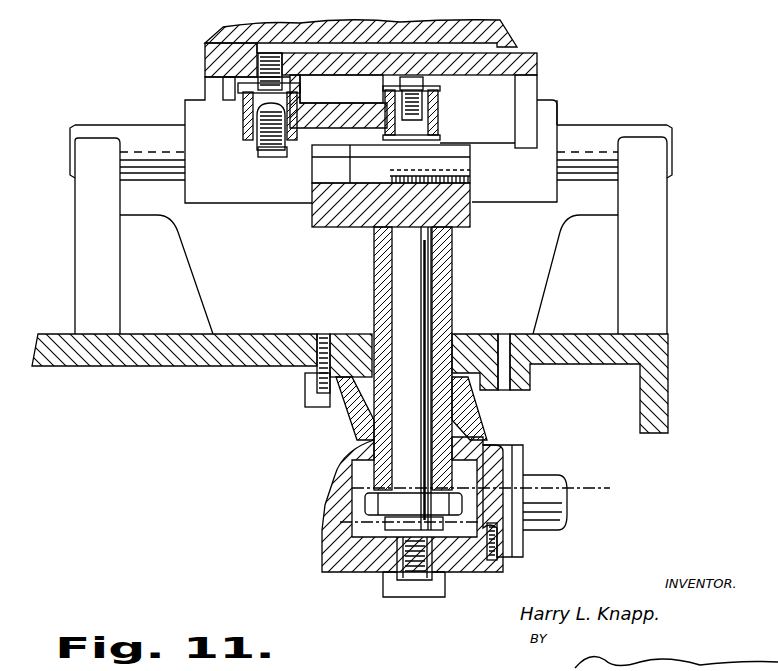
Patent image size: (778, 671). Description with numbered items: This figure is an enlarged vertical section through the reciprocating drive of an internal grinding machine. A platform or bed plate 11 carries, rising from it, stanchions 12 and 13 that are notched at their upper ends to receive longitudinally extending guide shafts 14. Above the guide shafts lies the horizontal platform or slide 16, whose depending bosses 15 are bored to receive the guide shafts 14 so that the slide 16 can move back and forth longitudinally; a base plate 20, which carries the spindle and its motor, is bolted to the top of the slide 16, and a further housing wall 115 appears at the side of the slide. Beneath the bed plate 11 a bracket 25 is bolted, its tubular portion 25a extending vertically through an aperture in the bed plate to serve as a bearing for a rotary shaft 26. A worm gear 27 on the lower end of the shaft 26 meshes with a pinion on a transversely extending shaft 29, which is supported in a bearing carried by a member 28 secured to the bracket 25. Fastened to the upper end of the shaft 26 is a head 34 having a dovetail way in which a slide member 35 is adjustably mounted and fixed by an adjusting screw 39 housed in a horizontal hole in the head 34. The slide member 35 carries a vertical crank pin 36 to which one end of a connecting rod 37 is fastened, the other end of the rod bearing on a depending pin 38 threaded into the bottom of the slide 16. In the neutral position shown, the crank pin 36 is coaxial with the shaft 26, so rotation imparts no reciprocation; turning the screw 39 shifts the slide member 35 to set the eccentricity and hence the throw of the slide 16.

The bed plate 11 is at (230, 362).
The stanchion 12 is at (650, 218).
The stanchion 13 is at (78, 245).
The guide shaft 14 is at (595, 125).
The boss 15 is at (278, 200).
The housing wall 115 is at (558, 107).
The platform 16 is at (536, 54).
The base plate 20 is at (513, 26).
The bracket 25 is at (340, 467).
The tubular portion 25a is at (452, 278).
The rotary shaft 26 is at (410, 330).
The worm gear 27 is at (367, 498).
The member 28 is at (505, 448).
The transversely extending shaft 29 is at (547, 475).
The head 34 is at (327, 228).
The slide member 35 is at (440, 160).
The crank pin 36 is at (437, 127).
The connecting rod 37 is at (344, 108).
The depending pin 38 is at (262, 100).
The adjusting screw 39 is at (468, 195).